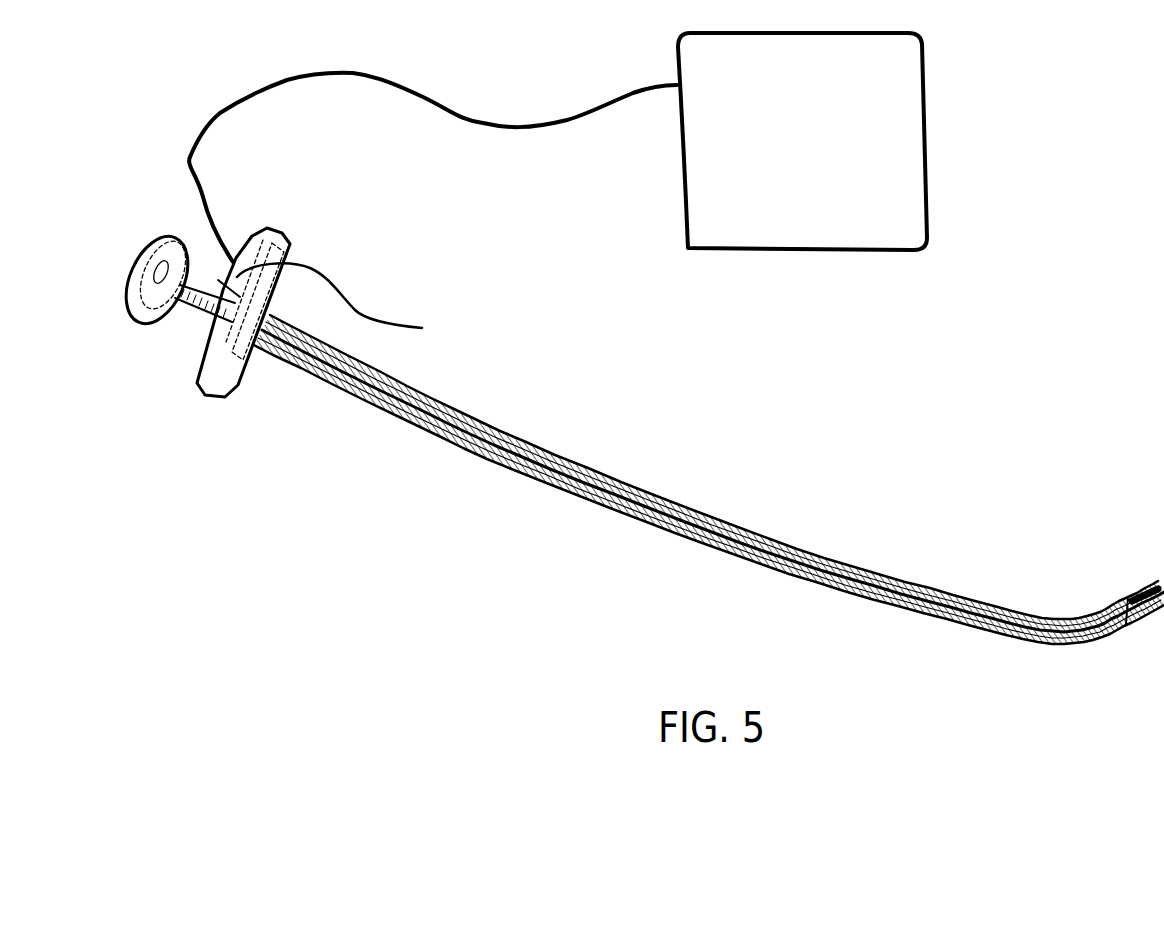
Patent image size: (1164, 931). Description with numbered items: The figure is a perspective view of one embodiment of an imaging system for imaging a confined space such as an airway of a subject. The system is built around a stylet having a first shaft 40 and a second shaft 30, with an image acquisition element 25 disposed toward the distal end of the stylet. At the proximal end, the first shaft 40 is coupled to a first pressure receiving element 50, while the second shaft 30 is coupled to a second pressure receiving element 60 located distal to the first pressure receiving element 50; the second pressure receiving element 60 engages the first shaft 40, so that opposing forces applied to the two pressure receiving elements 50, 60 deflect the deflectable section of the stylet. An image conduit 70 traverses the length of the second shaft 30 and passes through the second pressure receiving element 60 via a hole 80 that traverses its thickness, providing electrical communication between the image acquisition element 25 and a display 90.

The image acquisition element 25 is at (1133, 593).
The second shaft 30 is at (592, 477).
The first shaft 40 is at (583, 500).
The first pressure receiving element 50 is at (133, 327).
The second pressure receiving element 60 is at (233, 387).
The image conduit 70 is at (413, 97).
The hole 80 is at (355, 304).
The display 90 is at (800, 268).